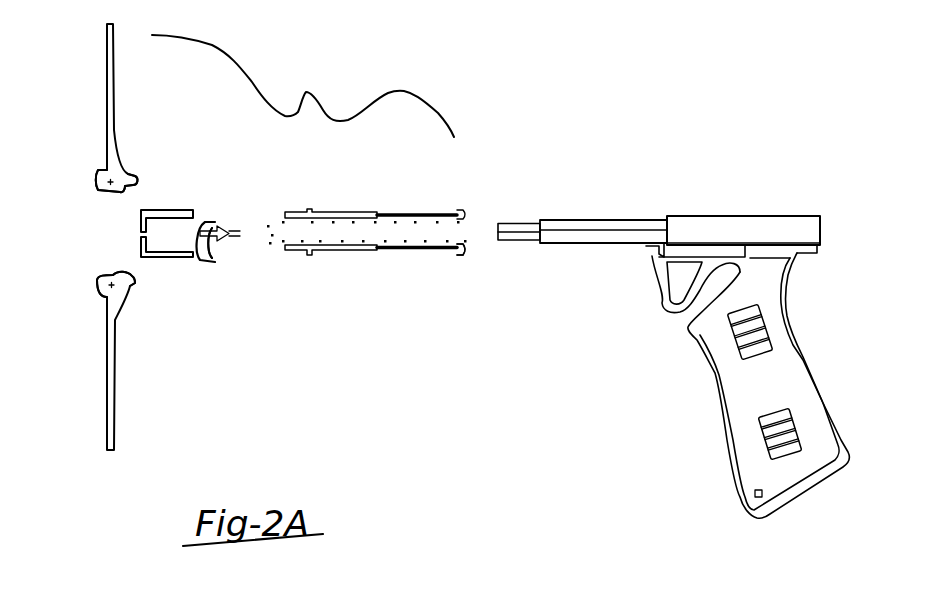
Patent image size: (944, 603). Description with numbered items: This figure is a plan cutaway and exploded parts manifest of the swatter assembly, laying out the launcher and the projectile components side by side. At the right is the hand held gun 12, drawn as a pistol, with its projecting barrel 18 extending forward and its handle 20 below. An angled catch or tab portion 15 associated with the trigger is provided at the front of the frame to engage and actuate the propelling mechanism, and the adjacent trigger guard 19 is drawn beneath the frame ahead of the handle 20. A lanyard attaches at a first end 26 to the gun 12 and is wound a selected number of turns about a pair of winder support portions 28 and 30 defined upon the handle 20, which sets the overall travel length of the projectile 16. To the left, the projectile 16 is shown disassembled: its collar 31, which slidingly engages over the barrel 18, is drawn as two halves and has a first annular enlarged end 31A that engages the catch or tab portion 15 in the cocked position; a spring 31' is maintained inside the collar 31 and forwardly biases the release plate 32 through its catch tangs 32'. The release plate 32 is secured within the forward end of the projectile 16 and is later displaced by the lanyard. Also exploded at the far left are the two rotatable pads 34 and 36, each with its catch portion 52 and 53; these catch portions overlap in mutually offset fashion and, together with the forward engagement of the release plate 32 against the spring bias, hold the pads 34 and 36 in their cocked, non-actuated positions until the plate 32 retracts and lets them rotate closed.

The hand held gun 12 is at (738, 230).
The angled catch or tab portion 15 is at (648, 249).
The projectile 16 is at (300, 108).
The barrel 18 is at (548, 220).
The trigger guard 19 is at (662, 290).
The handle 20 is at (733, 397).
The first end 26 is at (756, 497).
The winder support portion 28 is at (797, 423).
The winder support portion 30 is at (768, 328).
The collar 31 is at (375, 187).
The spring 31' is at (381, 208).
The first annular enlarged end 31A is at (460, 258).
The release plate 32 is at (210, 211).
The catch tangs 32' is at (230, 257).
The pad 34 is at (106, 117).
The pad 36 is at (107, 374).
The catch portion 52 is at (136, 184).
The catch portion 53 is at (135, 283).